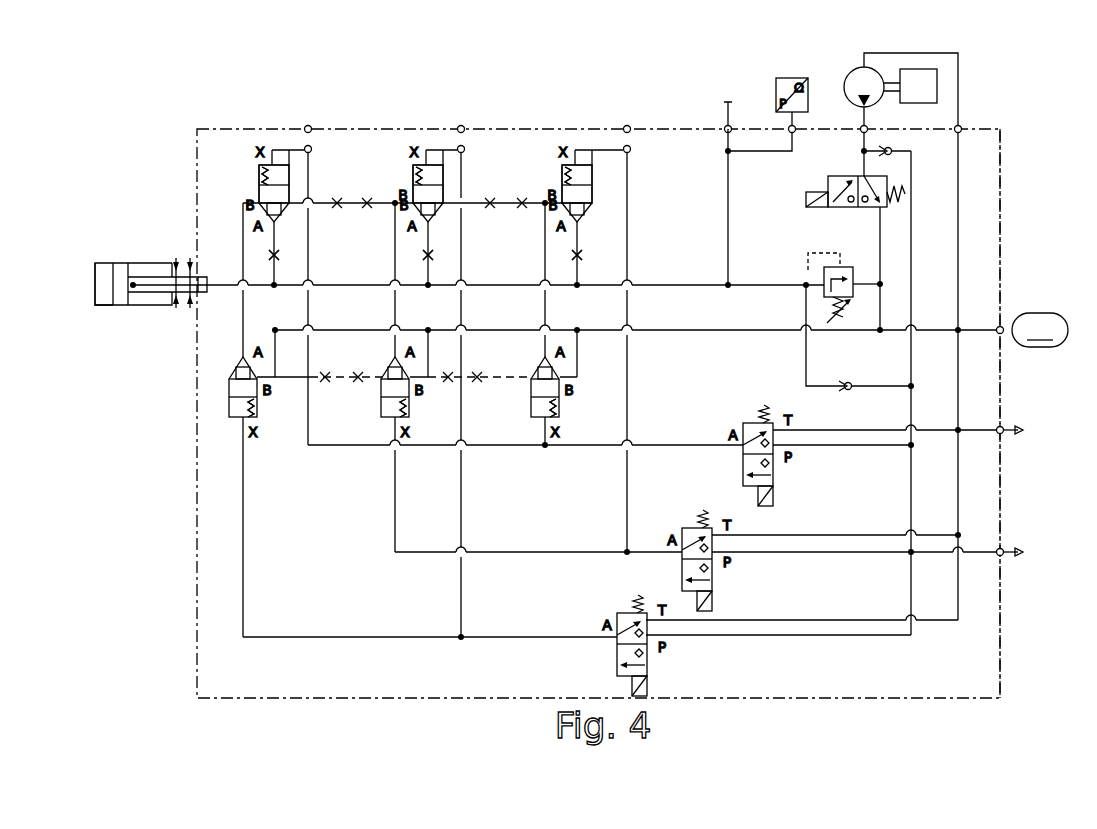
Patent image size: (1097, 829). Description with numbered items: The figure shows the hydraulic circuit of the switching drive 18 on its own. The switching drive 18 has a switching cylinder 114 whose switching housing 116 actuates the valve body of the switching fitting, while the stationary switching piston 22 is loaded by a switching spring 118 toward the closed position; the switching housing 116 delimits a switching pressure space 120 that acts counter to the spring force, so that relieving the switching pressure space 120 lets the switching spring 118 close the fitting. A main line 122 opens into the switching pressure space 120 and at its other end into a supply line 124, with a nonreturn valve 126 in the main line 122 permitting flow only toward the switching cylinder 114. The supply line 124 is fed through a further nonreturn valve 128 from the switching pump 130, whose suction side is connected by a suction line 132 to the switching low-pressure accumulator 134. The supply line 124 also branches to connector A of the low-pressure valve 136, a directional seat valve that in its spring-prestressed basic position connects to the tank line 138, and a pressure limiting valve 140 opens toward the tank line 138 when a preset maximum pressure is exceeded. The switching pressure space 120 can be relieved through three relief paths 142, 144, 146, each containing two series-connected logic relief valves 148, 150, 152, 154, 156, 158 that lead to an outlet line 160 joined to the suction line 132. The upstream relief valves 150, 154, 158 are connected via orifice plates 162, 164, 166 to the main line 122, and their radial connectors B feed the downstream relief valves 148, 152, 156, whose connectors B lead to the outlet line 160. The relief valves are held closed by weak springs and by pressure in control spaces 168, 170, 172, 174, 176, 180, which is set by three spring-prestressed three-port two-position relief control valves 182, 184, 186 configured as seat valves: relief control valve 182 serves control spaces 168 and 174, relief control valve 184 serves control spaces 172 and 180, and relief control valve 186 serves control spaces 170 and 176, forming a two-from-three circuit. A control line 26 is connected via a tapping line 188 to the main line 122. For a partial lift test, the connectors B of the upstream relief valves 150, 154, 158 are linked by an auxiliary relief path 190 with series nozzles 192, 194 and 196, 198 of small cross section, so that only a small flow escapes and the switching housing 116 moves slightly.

The switching drive 18 is at (1007, 305).
The switching piston 22 is at (122, 305).
The control line 26 is at (726, 106).
The switching cylinder 114 is at (133, 262).
The switching housing 116 is at (100, 306).
The switching spring 118 is at (178, 262).
The switching pressure space 120 is at (165, 298).
The main line 122 is at (345, 332).
The supply line 124 is at (913, 405).
The nonreturn valve 126 is at (848, 380).
The nonreturn valve 128 is at (893, 150).
The switching pump 130 is at (845, 87).
The suction line 132 is at (1000, 290).
The switching low-pressure accumulator 134 is at (1040, 330).
The low-pressure valve 136 is at (828, 186).
The tank line 138 is at (880, 258).
The pressure limiting valve 140 is at (880, 290).
The relief path 142 is at (246, 178).
The relief path 144 is at (420, 174).
The relief path 146 is at (582, 174).
The relief valve 148 is at (202, 399).
The relief valve 150 is at (259, 175).
The relief valve 152 is at (369, 418).
The relief valve 154 is at (413, 175).
The relief valve 156 is at (519, 417).
The relief valve 158 is at (563, 178).
The outlet line 160 is at (705, 333).
The orifice plate 162 is at (283, 253).
The orifice plate 164 is at (436, 253).
The orifice plate 166 is at (585, 253).
The control space 168 is at (229, 405).
The control space 170 is at (280, 165).
The control space 172 is at (395, 420).
The control space 174 is at (435, 165).
The control space 176 is at (545, 420).
The control space 180 is at (585, 165).
The relief control valve 182 is at (647, 655).
The relief control valve 184 is at (713, 572).
The relief control valve 186 is at (775, 470).
The tapping line 188 is at (728, 200).
The auxiliary relief path 190 is at (388, 213).
The nozzle 192 is at (337, 200).
The nozzle 194 is at (367, 200).
The nozzle 196 is at (490, 200).
The nozzle 198 is at (522, 208).